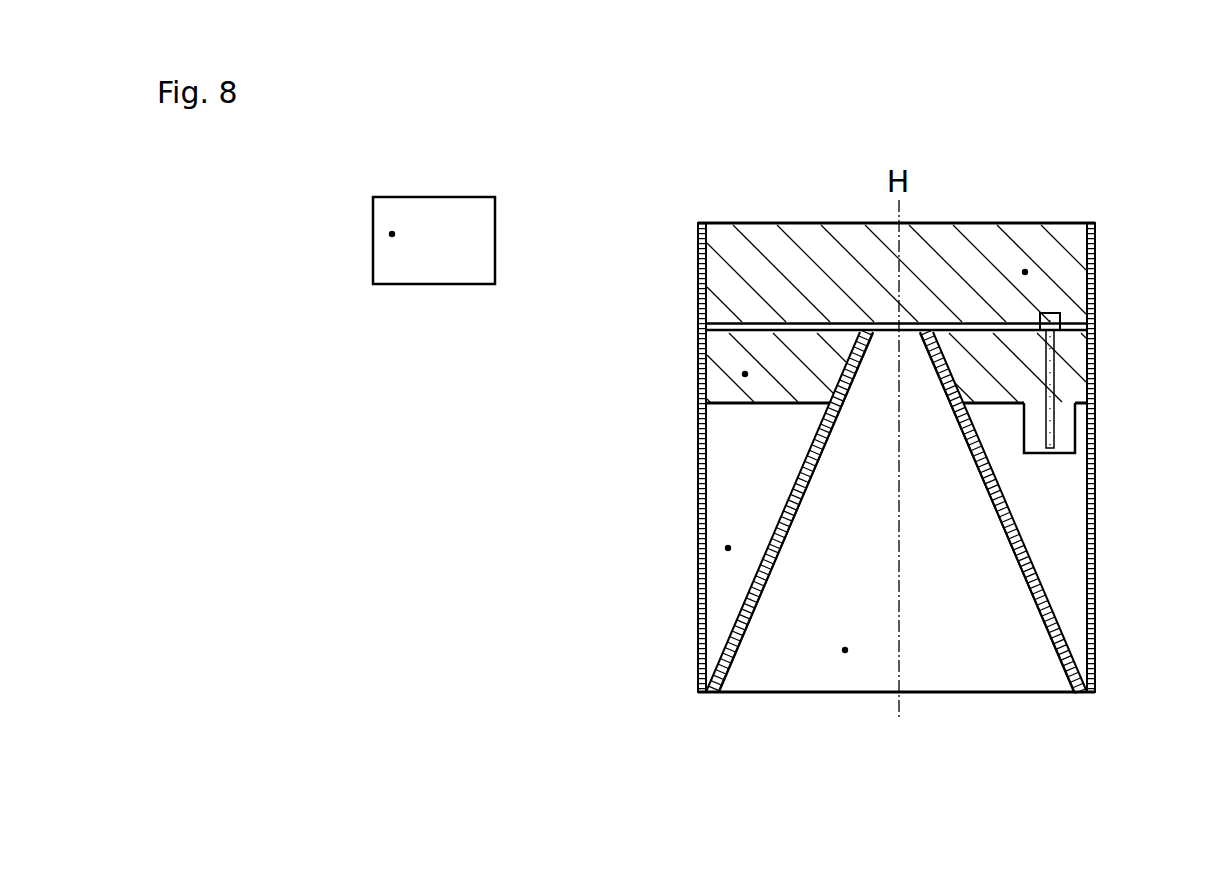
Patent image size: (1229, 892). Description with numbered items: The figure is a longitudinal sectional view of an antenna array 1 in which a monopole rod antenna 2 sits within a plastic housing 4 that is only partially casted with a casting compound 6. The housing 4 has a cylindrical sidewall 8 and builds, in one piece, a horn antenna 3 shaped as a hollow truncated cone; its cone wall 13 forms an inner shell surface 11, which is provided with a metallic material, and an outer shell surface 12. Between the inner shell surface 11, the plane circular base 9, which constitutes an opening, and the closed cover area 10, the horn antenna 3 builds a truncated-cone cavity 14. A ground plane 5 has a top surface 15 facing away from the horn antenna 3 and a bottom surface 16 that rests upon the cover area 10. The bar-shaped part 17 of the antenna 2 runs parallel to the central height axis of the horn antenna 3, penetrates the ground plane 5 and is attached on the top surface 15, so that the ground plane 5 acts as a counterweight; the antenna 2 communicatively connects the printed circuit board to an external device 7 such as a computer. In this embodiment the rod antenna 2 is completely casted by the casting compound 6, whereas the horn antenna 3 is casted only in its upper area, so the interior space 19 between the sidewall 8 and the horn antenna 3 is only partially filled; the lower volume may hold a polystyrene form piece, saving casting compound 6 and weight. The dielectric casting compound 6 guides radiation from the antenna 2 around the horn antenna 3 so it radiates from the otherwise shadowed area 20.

The antenna array 1 is at (466, 389).
The antenna 2 is at (1063, 392).
The horn antenna 3 is at (1062, 592).
The housing 4 is at (1098, 532).
The ground plane 5 is at (757, 316).
The casting compound 6 is at (1028, 270).
The external device 7 is at (390, 236).
The sidewall 8 is at (1097, 256).
The base 9 is at (982, 694).
The cover area 10 is at (909, 336).
The inner shell surface 11 is at (757, 623).
The outer shell surface 12 is at (795, 489).
The cone wall 13 is at (782, 512).
The cavity 14 is at (845, 653).
The top surface 15 is at (806, 315).
The bottom surface 16 is at (785, 332).
The bar-shaped part 17 is at (1052, 357).
The interior space 19 is at (727, 550).
The shadowed area 20 is at (745, 378).